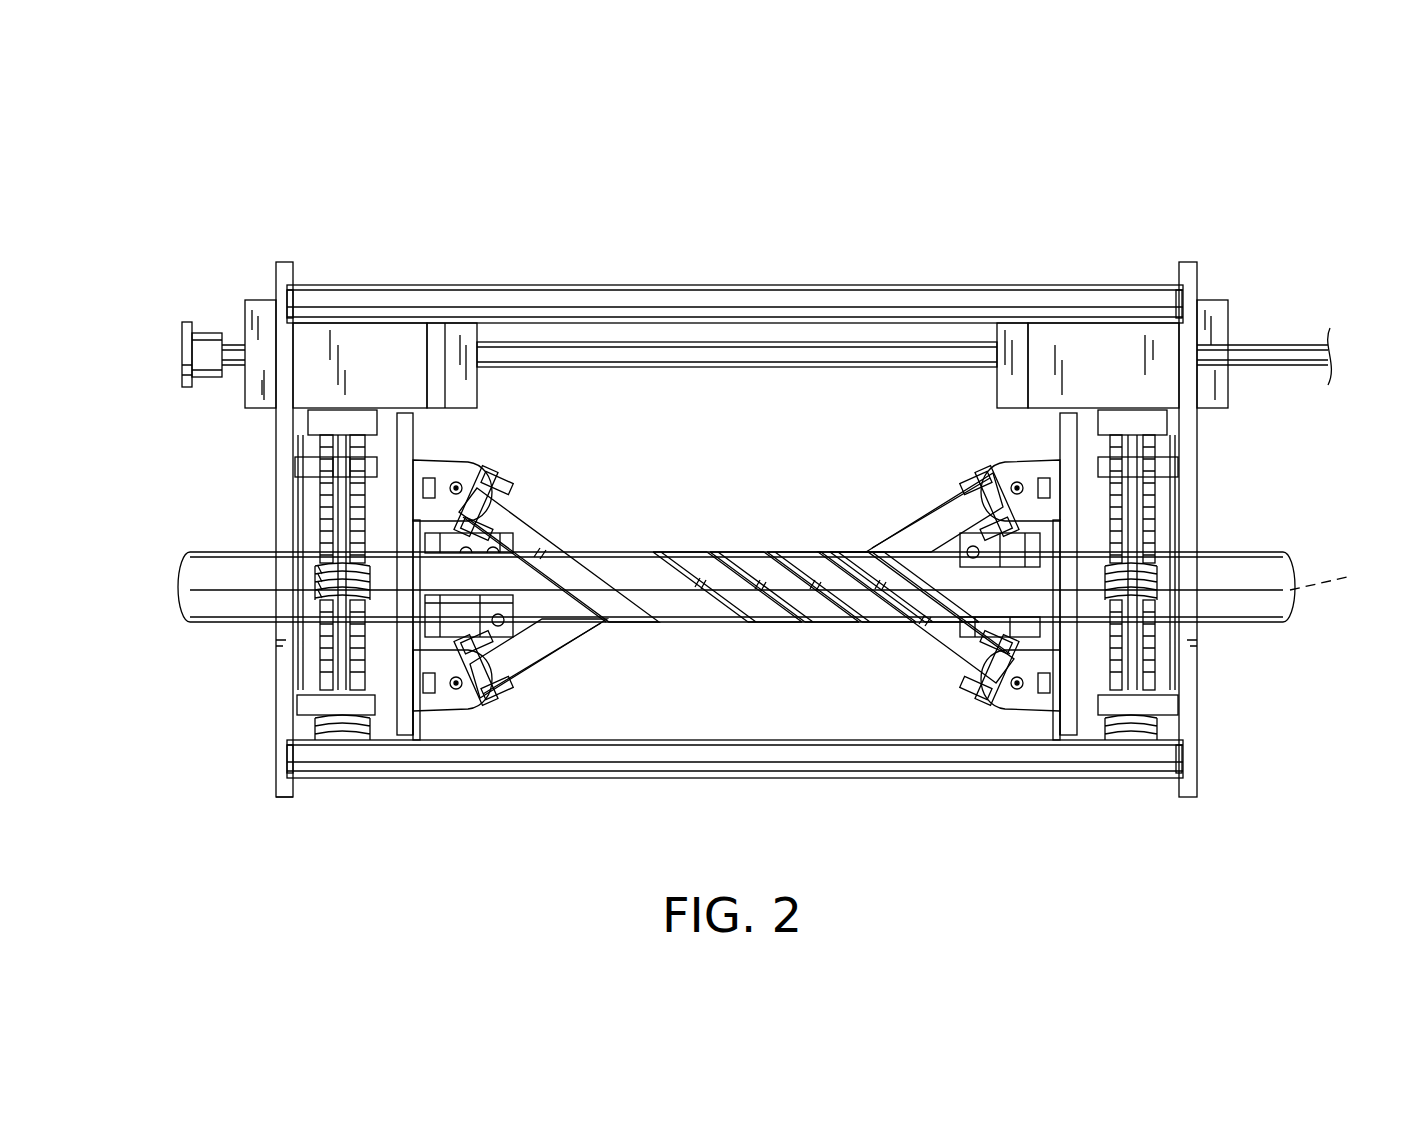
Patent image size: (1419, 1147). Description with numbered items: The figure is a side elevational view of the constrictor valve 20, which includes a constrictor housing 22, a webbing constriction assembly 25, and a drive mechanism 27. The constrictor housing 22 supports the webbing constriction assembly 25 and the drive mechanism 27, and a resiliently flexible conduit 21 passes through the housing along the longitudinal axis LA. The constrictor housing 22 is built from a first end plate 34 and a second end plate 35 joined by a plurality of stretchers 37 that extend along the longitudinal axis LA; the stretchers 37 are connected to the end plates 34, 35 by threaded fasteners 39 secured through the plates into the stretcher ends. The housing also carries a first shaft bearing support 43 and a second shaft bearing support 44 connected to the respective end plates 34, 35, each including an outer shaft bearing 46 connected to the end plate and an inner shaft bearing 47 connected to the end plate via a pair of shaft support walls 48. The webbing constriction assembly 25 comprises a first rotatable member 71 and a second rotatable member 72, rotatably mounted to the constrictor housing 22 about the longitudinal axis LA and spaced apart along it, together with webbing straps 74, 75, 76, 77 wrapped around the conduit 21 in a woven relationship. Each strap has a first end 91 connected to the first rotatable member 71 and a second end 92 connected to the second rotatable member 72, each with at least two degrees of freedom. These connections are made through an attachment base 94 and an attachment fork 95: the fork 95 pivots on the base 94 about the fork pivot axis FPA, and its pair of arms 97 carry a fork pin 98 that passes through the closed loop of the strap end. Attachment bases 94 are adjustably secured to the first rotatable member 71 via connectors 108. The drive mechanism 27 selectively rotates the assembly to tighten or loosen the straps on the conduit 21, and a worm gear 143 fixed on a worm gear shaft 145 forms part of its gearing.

The constrictor valve 20 is at (206, 210).
The resiliently flexible conduit 21 is at (220, 555).
The constrictor housing 22 is at (296, 792).
The webbing constriction assembly 25 is at (928, 682).
The drive mechanism 27 is at (197, 313).
The first end plate 34 is at (283, 458).
The second end plate 35 is at (1190, 462).
The stretchers 37 is at (708, 308).
The threaded fasteners 39 is at (287, 300).
The first shaft bearing support 43 is at (283, 300).
The second shaft bearing support 44 is at (1215, 325).
The outer shaft bearing 46 is at (263, 383).
The inner shaft bearing 47 is at (456, 340).
The shaft support walls 48 is at (318, 335).
The first rotatable member 71 is at (403, 662).
The second rotatable member 72 is at (1068, 668).
The webbing strap 74 is at (620, 555).
The webbing strap 75 is at (700, 555).
The webbing strap 76 is at (750, 555).
The webbing strap 77 is at (533, 533).
The first end 91 is at (512, 502).
The second end 92 is at (925, 552).
The attachment base 94 is at (458, 482).
The attachment fork 95 is at (488, 480).
The arms 97 is at (520, 485).
The fork pin 98 is at (505, 505).
The connectors 108 is at (430, 465).
The worm gear 143 is at (318, 592).
The worm gear shaft 145 is at (340, 510).
The fork pivot axis FPA is at (480, 470).
The longitudinal axis LA is at (1336, 559).